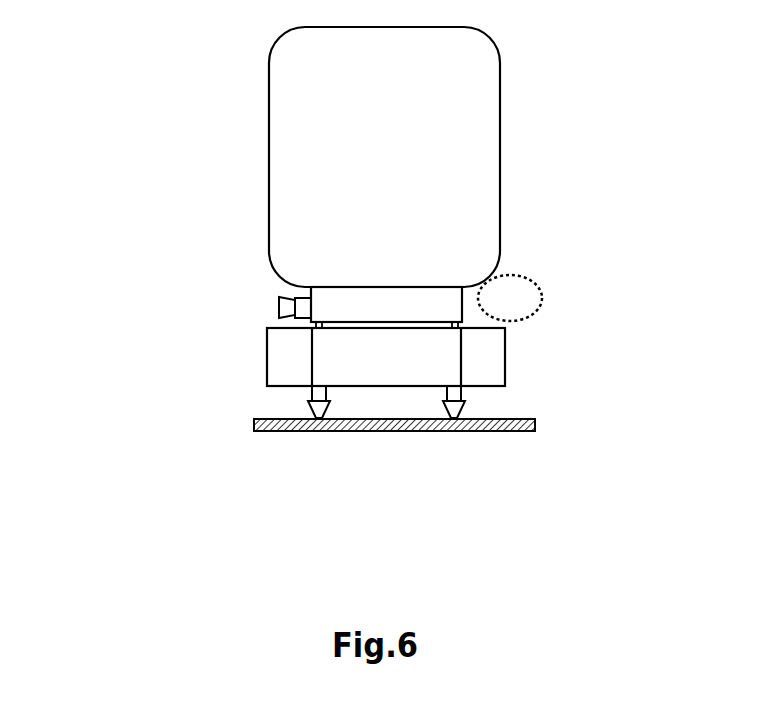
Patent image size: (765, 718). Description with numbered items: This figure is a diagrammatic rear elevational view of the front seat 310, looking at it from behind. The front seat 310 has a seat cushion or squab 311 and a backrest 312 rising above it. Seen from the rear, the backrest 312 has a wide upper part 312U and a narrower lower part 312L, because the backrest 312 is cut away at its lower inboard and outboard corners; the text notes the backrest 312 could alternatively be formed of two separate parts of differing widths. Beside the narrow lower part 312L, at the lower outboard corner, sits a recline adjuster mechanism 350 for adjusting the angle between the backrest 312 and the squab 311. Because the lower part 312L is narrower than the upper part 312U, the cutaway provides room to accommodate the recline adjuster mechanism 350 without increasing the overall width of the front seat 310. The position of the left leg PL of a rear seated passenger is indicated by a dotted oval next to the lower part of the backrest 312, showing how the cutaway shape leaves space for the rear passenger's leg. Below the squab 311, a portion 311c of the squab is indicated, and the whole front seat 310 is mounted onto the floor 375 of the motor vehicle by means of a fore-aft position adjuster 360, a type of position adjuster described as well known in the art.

The front seat 310 is at (217, 146).
The backrest 312 is at (253, 90).
The wide upper part of backrest 312U is at (500, 93).
The narrower lower part of backrest 312L is at (464, 244).
The recline adjuster mechanism 350 is at (277, 293).
The seat cushion or squab 311 is at (267, 347).
The base block compartment 311c is at (482, 362).
The fore-aft position adjuster 360 is at (310, 400).
The floor 375 is at (268, 432).
The left leg of rear seated passenger PL is at (537, 287).